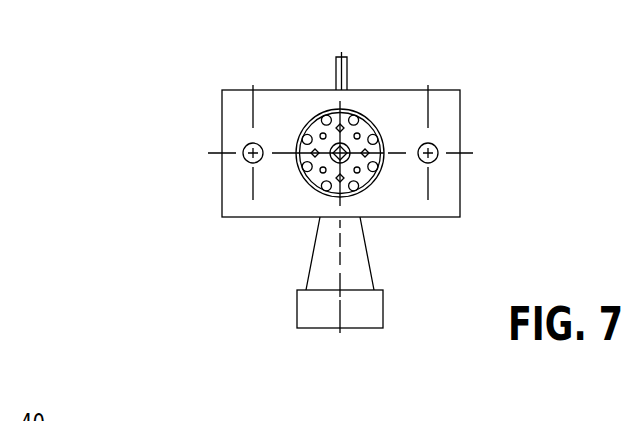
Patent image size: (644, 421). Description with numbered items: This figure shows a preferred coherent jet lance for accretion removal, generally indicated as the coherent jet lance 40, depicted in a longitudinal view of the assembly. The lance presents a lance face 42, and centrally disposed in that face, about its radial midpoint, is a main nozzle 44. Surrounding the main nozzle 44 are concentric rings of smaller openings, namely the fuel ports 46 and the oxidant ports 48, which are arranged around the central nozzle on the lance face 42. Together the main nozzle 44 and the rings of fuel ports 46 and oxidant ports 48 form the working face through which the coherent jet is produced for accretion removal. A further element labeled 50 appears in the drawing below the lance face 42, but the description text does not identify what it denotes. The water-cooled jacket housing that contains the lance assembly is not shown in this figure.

The coherent jet lance 40 is at (160, 117).
The lance face 42 is at (344, 165).
The main nozzle 44 is at (346, 147).
The fuel port 46 is at (370, 173).
The oxidant port 48 is at (323, 114).
The mounting base 50 is at (351, 350).